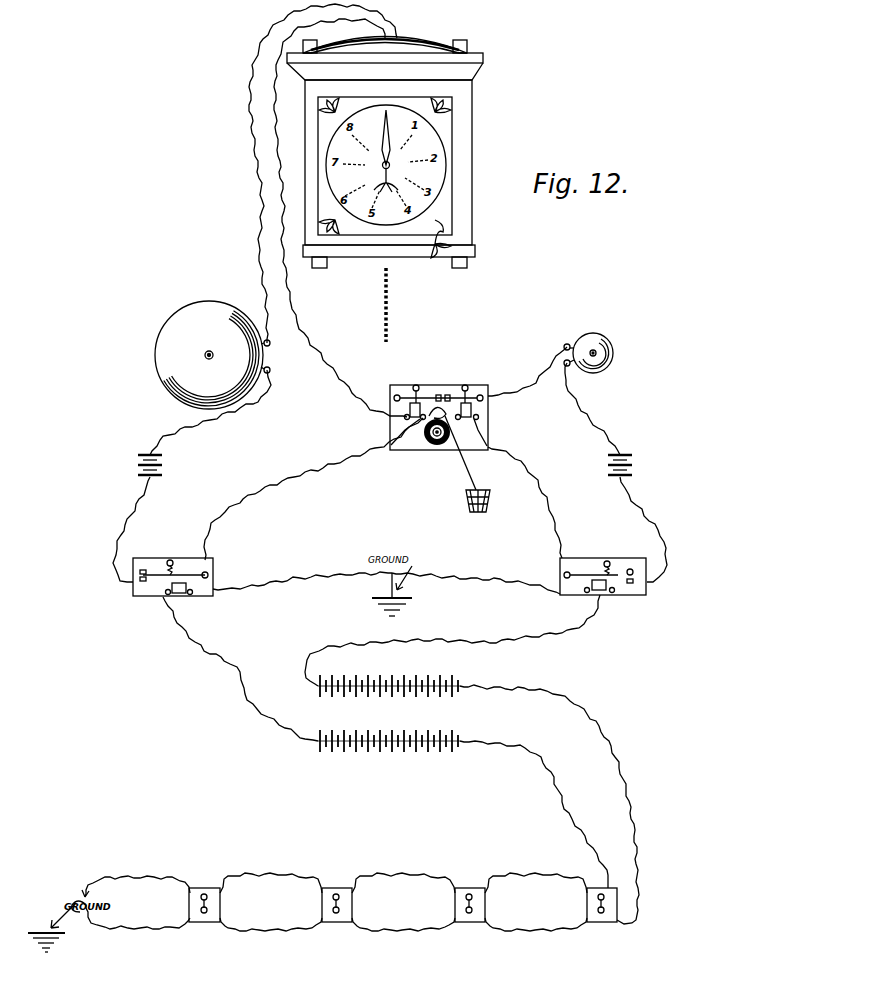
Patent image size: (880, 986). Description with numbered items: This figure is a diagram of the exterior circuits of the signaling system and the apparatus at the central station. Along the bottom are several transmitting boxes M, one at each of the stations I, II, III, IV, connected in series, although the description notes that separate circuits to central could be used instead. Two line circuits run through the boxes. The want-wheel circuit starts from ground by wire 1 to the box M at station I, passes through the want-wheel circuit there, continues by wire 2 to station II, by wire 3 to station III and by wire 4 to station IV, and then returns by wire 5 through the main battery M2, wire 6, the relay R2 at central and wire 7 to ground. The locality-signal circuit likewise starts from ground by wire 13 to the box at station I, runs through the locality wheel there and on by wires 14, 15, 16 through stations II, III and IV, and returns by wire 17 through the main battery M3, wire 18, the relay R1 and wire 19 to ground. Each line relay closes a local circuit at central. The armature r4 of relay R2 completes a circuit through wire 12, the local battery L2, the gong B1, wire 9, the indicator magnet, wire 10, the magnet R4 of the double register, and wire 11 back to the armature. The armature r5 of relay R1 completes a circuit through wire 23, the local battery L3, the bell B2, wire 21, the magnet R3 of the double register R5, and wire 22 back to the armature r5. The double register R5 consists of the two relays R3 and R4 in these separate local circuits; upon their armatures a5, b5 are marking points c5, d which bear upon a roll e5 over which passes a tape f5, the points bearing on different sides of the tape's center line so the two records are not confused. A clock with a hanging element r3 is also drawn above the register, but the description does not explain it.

The wire 1 is at (136, 877).
The wire 2 is at (271, 874).
The wire 3 is at (403, 874).
The wire 4 is at (536, 874).
The wire 5 is at (534, 814).
The wire 6 is at (240, 669).
The wire 7 is at (302, 588).
The wire 9 is at (262, 243).
The wire 10 is at (340, 218).
The wire 11 is at (313, 489).
The wire 12 is at (131, 529).
The wire 13 is at (138, 929).
The wire 14 is at (271, 935).
The wire 15 is at (403, 935).
The wire 16 is at (536, 935).
The wire 17 is at (550, 804).
The wire 18 is at (452, 640).
The wire 19 is at (476, 579).
The wire 21 is at (518, 398).
The wire 22 is at (525, 502).
The wire 23 is at (655, 529).
The gong B1 is at (212, 355).
The bell B2 is at (614, 353).
The local battery L2 is at (163, 466).
The local battery L3 is at (633, 466).
The relay R1 is at (603, 578).
The relay R2 is at (173, 578).
The magnet of double register R3 is at (483, 398).
The magnet of double register R4 is at (394, 399).
The double register R5 is at (443, 393).
The chain r3 is at (397, 305).
The armature r4 is at (163, 567).
The armature r5 is at (625, 569).
The armature a5 is at (467, 387).
The armature b5 is at (416, 386).
The marking point c5 is at (449, 394).
The marking point d is at (438, 394).
The roll e5 is at (447, 446).
The tape f5 is at (428, 444).
The box M is at (403, 890).
The main battery M2 is at (389, 754).
The main battery M3 is at (389, 674).
The station I is at (222, 905).
The station II is at (354, 905).
The station III is at (487, 905).
The station IV is at (585, 905).